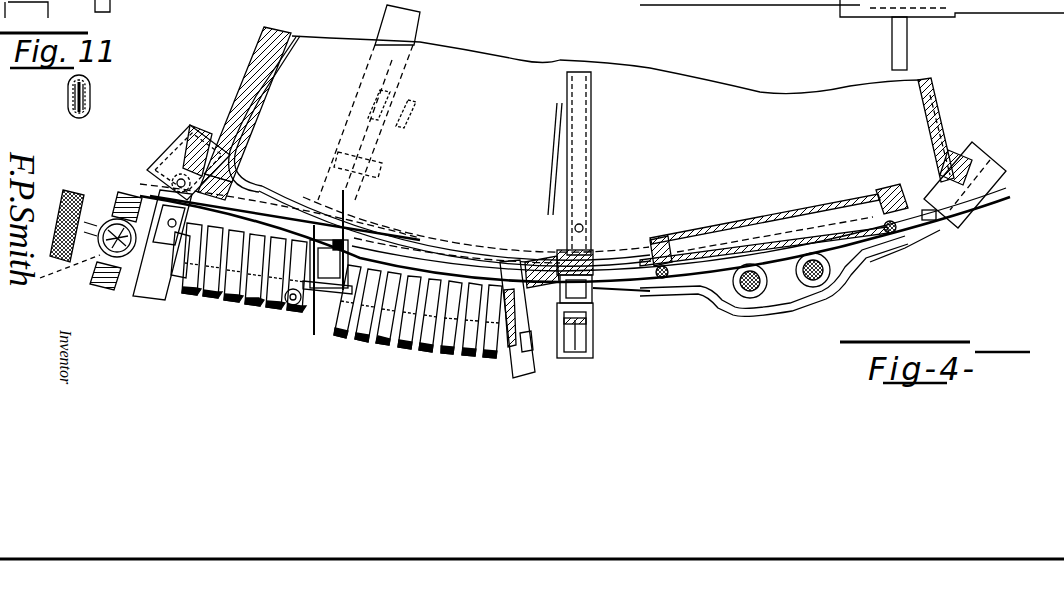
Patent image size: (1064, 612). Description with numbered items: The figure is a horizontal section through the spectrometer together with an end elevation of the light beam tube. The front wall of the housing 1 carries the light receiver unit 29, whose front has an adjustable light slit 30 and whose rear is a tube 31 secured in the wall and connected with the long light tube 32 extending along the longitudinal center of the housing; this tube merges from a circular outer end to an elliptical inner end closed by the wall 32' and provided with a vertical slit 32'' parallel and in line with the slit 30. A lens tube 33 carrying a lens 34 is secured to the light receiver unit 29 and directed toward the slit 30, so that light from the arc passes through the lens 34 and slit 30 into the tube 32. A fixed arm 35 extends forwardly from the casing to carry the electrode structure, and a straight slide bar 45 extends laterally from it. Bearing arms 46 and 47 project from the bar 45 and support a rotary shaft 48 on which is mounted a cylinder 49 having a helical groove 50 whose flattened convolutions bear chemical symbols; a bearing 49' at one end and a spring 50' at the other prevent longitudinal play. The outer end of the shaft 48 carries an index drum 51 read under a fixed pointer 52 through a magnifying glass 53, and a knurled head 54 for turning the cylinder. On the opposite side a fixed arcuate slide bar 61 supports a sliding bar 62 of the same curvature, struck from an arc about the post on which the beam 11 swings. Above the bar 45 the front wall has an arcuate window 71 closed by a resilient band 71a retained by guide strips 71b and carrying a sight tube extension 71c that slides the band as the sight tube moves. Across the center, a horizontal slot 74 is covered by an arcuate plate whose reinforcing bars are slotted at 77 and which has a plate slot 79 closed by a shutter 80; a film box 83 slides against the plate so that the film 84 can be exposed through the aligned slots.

In FIG. 4, the housing 1 is at (952, 117).
In FIG. 4, the beam 11 is at (420, 20).
In FIG. 4, the light receiver unit 29 is at (596, 290).
In FIG. 4, the light slit 30 is at (588, 315).
In FIG. 4, the tube 31 is at (588, 256).
In FIG. 11, the light tube 32 is at (56, 96).
In FIG. 4, the light tube 32 is at (600, 163).
In FIG. 11, the wall 32' is at (110, 94).
In FIG. 11, the vertical slit 32'' is at (110, 100).
In FIG. 4, the lens tube 33 is at (323, 290).
In FIG. 4, the lens 34 is at (578, 352).
In FIG. 4, the fixed arm 35 is at (1040, 10).
In FIG. 4, the slide bar 45 is at (160, 165).
In FIG. 4, the bearing arm 46 is at (512, 380).
In FIG. 4, the bearing arm 47 is at (150, 300).
In FIG. 4, the rotary shaft 48 is at (526, 352).
In FIG. 4, the cylinder 49 is at (463, 351).
In FIG. 4, the bearing 49' is at (489, 360).
In FIG. 4, the helical groove 50 is at (322, 310).
In FIG. 4, the spring 50' is at (189, 294).
In FIG. 4, the index drum 51 is at (110, 290).
In FIG. 4, the fixed pointer 52 is at (70, 281).
In FIG. 4, the magnifying glass 53 is at (112, 216).
In FIG. 4, the knurled head 54 is at (75, 188).
In FIG. 4, the fixed arcuate slide bar 61 is at (920, 246).
In FIG. 4, the sliding bar 62 is at (545, 280).
In FIG. 4, the arcuate window 71 is at (494, 265).
In FIG. 4, the resilient band 71a is at (256, 100).
In FIG. 4, the guide strips 71b is at (283, 190).
In FIG. 4, the sight tube extension 71c is at (368, 190).
In FIG. 4, the horizontal slot 74 is at (900, 190).
In FIG. 4, the slot 77 is at (932, 222).
In FIG. 4, the plate slot 79 is at (693, 240).
In FIG. 4, the shutter 80 is at (762, 236).
In FIG. 4, the film box 83 is at (732, 314).
In FIG. 4, the film 84 is at (795, 244).